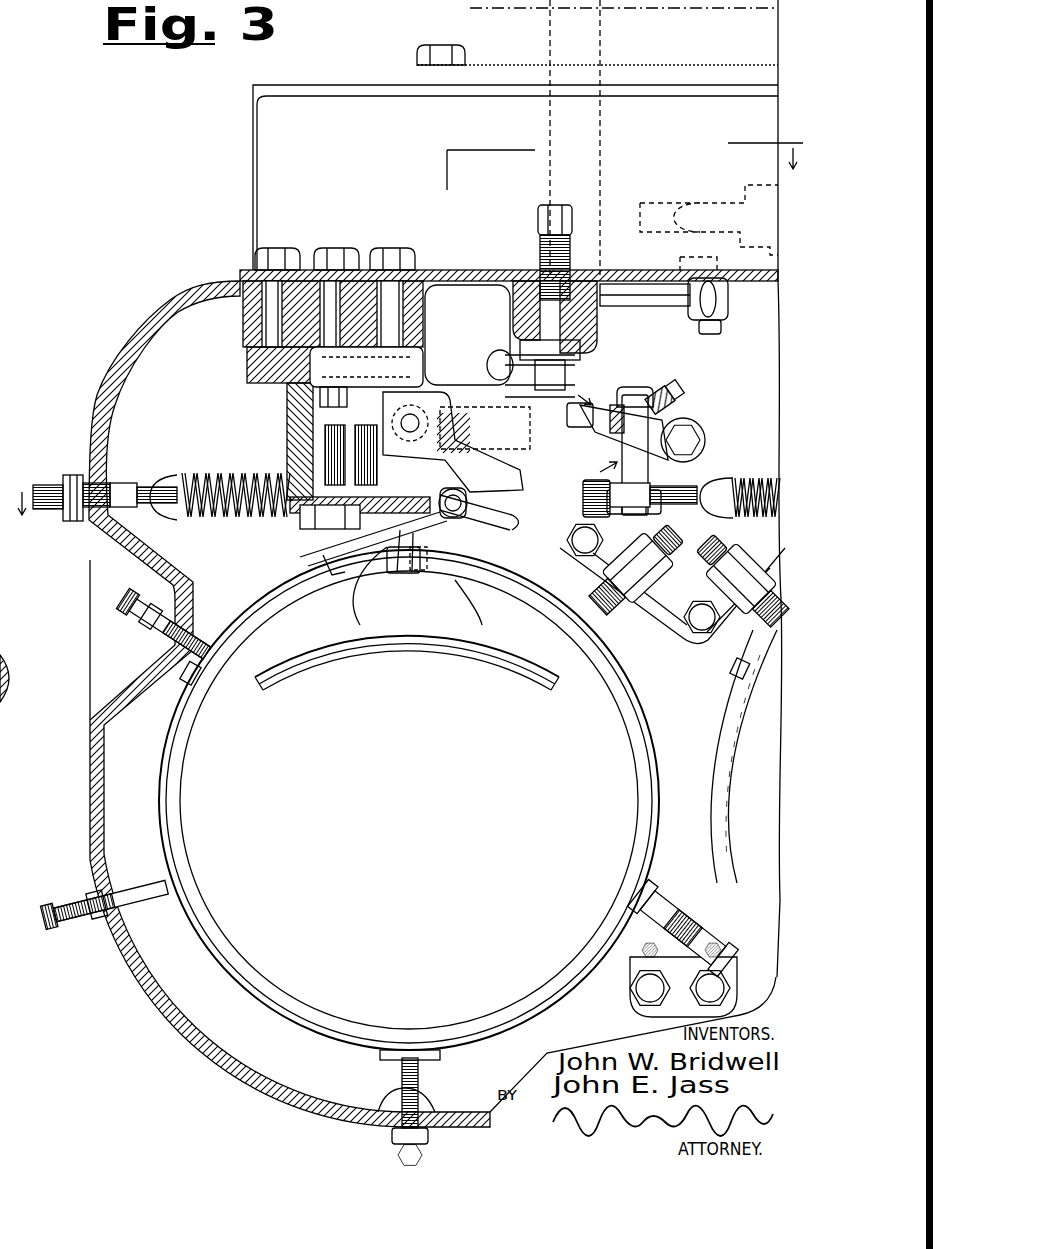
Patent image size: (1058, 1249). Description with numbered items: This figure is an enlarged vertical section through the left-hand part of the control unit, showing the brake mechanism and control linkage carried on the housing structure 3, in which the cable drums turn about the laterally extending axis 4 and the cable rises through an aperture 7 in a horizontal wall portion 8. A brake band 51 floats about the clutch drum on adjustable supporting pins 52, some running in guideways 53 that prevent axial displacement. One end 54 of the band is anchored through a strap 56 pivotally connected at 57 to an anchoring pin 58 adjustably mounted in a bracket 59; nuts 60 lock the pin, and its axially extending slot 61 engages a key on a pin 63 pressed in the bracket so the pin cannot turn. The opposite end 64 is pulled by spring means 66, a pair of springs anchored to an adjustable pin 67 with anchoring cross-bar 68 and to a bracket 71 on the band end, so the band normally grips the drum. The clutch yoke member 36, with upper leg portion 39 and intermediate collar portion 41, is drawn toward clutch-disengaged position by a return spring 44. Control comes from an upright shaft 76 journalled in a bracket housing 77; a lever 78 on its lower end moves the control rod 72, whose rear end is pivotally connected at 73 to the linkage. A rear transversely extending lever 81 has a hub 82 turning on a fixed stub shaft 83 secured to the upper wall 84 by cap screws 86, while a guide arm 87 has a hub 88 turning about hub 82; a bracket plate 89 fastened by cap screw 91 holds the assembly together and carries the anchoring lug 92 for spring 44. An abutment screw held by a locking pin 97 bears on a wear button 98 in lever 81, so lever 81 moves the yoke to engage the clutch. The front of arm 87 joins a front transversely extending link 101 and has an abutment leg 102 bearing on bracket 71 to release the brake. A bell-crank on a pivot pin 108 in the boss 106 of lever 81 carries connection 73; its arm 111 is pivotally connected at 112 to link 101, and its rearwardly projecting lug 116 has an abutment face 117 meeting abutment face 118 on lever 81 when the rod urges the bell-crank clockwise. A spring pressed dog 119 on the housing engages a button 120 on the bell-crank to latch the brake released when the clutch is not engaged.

The housing structure 3 is at (126, 357).
The laterally extending axis 4 is at (406, 317).
The aperture 7 is at (255, 485).
The horizontal wall portion 8 is at (596, 427).
The clutch yoke member 36 is at (302, 660).
The upper leg portion 39 is at (394, 553).
The intermediate collar portion 41 is at (283, 693).
The return spring 44 is at (467, 517).
The brake band 51 is at (178, 745).
The adjustable supporting pins 52 is at (123, 610).
The guideways 53 is at (213, 627).
The end of brake band 54 is at (328, 563).
The strap 56 is at (513, 521).
The pivotal connection 57 is at (520, 493).
The anchoring pin 58 is at (660, 388).
The bracket 59 is at (668, 443).
The nuts 60 is at (628, 395).
The axially extending slot 61 is at (665, 398).
The pin 63 is at (662, 425).
The opposite end of brake band 64 is at (458, 562).
The spring means 66 is at (800, 437).
The adjustable pin 67 is at (682, 488).
The anchoring cross-bar 68 is at (727, 503).
The bracket 71 is at (437, 580).
The control rod 72 is at (498, 310).
The pivotal connection 73 is at (476, 300).
The upright shaft 76 is at (772, 42).
The bracket housing 77 is at (488, 33).
The lever 78 is at (705, 212).
The rear transversely extending lever 81 is at (378, 383).
The hub 82 is at (290, 453).
The fixed stub shaft 83 is at (278, 447).
The upper wall 84 is at (238, 288).
The cap screws 86 is at (317, 252).
The guide arm 87 is at (283, 407).
The hub 88 is at (288, 442).
The bracket plate 89 is at (285, 517).
The cap screw 91 is at (330, 540).
The anchoring lug 92 is at (503, 537).
The locking pin 97 is at (462, 330).
The wear button 98 is at (400, 423).
The front transversely extending link 101 is at (435, 345).
The abutment leg 102 is at (305, 528).
The boss 106 is at (603, 510).
The pivot pin 108 is at (480, 300).
The bell-crank arm 111 is at (484, 300).
The pivotal connection 112 is at (490, 310).
The rearwardly projecting lug 116 is at (612, 387).
The abutment face 117 is at (568, 380).
The abutment face 118 is at (555, 412).
The spring pressed dog 119 is at (590, 355).
The button 120 is at (504, 310).